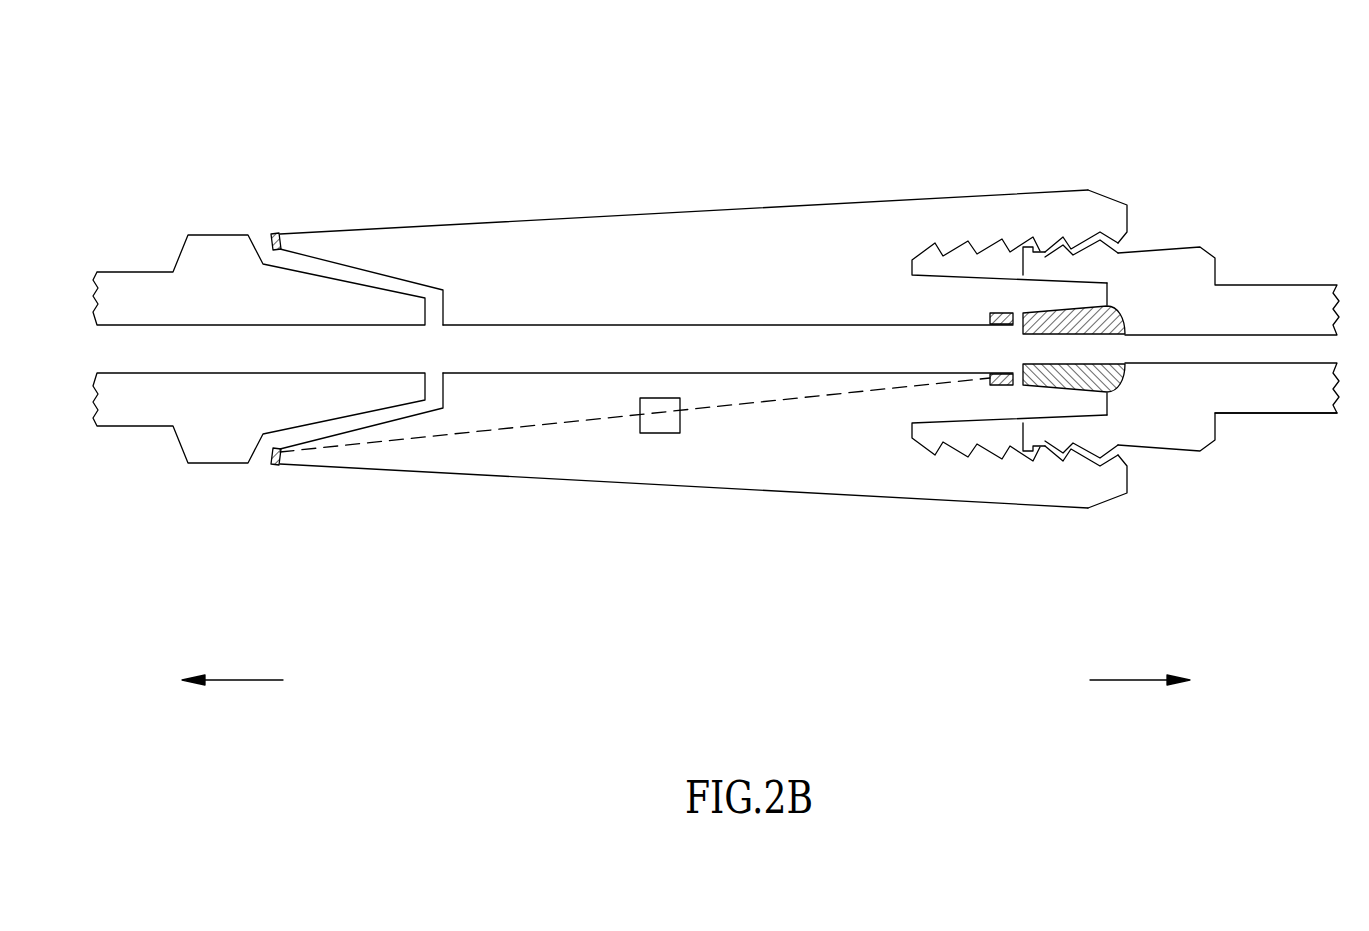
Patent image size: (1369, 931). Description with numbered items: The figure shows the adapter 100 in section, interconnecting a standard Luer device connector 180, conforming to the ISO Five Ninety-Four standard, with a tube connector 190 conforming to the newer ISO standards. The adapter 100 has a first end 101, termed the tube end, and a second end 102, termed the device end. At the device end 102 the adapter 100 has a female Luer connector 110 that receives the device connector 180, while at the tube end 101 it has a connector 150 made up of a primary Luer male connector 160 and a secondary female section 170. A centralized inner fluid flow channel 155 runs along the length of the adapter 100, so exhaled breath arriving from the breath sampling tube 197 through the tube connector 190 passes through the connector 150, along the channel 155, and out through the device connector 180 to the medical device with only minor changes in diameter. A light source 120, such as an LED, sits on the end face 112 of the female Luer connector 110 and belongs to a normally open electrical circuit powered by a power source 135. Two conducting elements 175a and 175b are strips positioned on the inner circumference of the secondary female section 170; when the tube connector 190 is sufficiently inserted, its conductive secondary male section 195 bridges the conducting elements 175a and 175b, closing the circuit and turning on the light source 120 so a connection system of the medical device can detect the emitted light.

The adapter 100 is at (705, 342).
The first end 101 is at (1110, 680).
The second end 102 is at (240, 680).
The female Luer connector 110 is at (357, 161).
The end face 112 is at (278, 463).
The light source 120 is at (275, 235).
The power source 135 is at (660, 435).
The connector 150 is at (1025, 163).
The inner fluid flow channel 155 is at (576, 345).
The primary Luer male connector 160 is at (1080, 412).
The secondary female section 170 is at (1017, 375).
The conducting element 175a is at (997, 386).
The conducting element 175b is at (990, 318).
The device connector 180 is at (138, 252).
The tube connector 190 is at (1258, 252).
The conductive secondary male section 195 is at (1035, 313).
The breath sampling tube 197 is at (1267, 413).